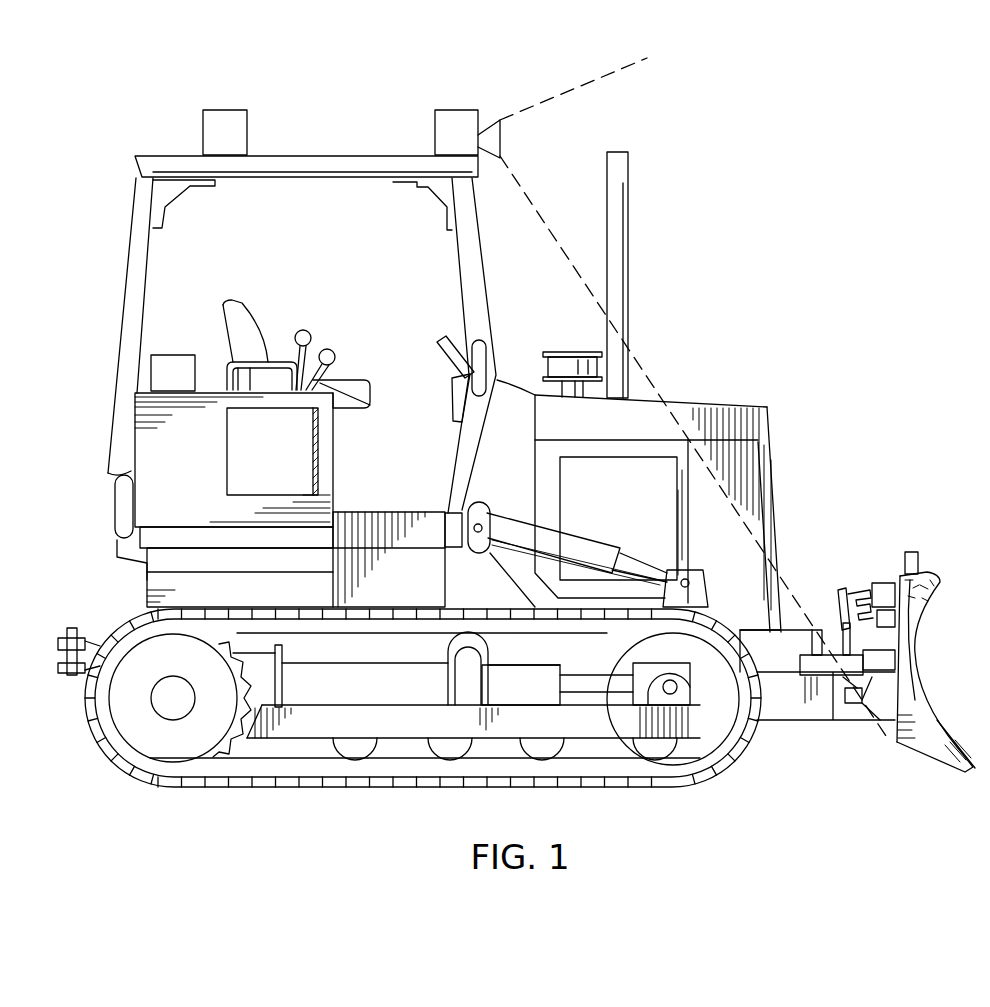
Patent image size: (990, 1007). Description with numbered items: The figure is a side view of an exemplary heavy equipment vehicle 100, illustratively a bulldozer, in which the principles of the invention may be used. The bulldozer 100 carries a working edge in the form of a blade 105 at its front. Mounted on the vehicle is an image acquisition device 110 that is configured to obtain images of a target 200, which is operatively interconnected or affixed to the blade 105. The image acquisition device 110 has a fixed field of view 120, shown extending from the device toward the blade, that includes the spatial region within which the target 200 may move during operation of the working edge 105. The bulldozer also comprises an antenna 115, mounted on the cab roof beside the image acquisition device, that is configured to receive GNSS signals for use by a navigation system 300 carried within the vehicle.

The heavy equipment vehicle 100 is at (812, 220).
The blade 105 is at (920, 673).
The image acquisition device 110 is at (455, 110).
The antenna 115 is at (228, 110).
The fixed field of view 120 is at (578, 86).
The target 200 is at (909, 552).
The navigation system 300 is at (178, 355).